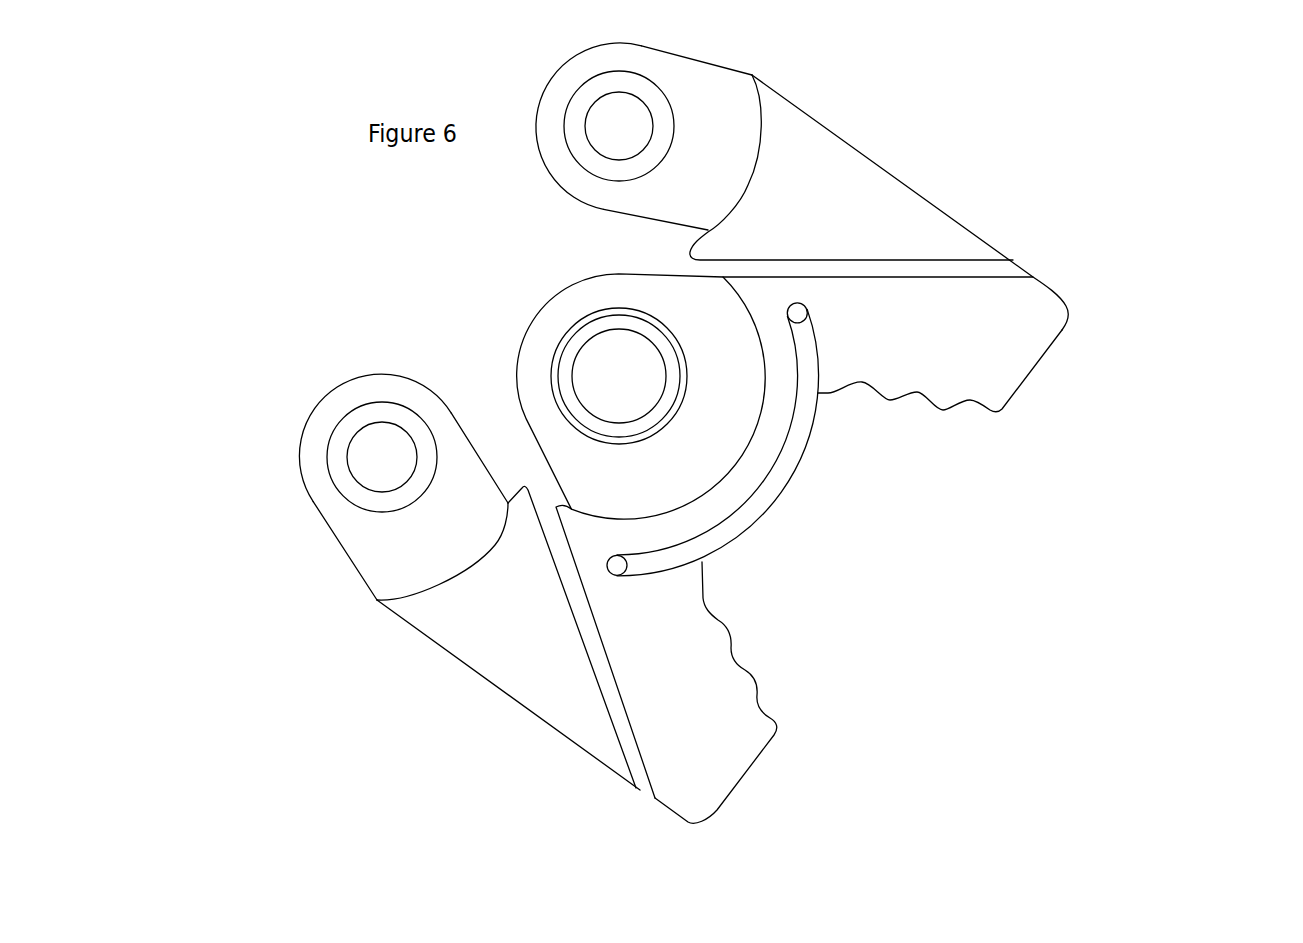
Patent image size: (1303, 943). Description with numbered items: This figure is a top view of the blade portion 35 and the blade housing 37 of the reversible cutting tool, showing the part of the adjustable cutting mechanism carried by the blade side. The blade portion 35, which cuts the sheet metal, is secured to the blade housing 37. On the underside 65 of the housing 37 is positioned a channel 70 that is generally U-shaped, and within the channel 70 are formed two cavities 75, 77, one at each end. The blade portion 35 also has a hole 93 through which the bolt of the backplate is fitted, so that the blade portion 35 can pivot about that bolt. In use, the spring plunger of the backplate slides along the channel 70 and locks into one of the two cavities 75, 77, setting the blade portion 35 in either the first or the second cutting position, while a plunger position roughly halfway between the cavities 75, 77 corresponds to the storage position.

The blade portion 35 is at (785, 272).
The blade housing 37 is at (1013, 258).
The underside 65 is at (943, 325).
The channel 70 is at (793, 456).
The cavity 75 is at (610, 568).
The cavity 77 is at (799, 311).
The hole 93 is at (595, 375).